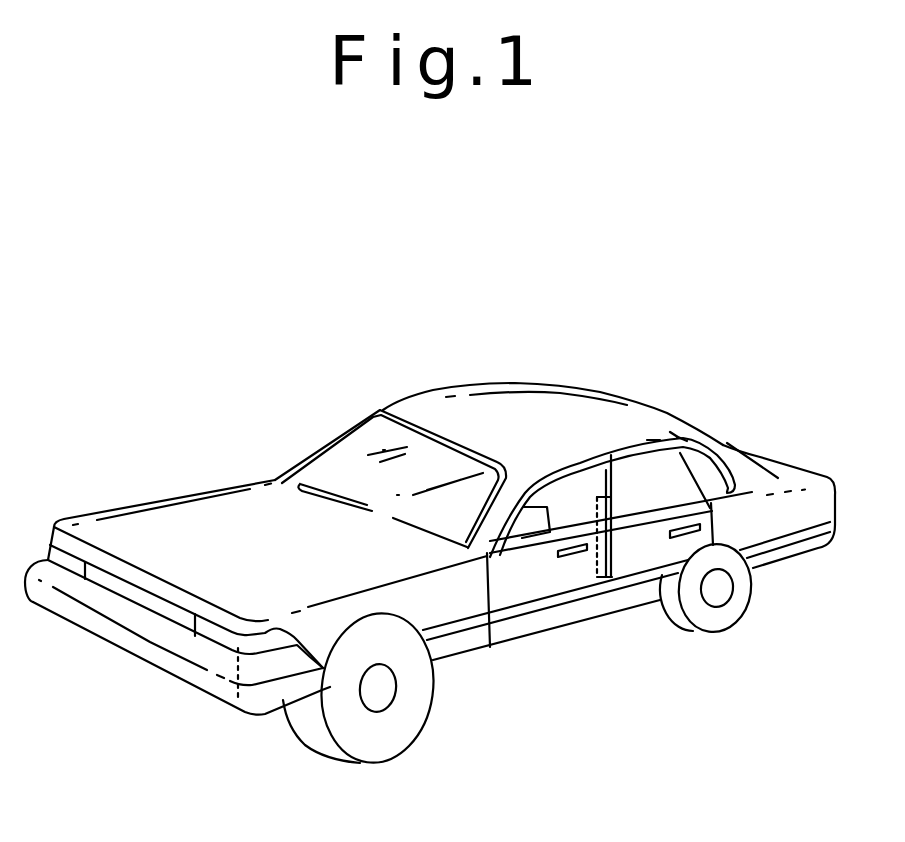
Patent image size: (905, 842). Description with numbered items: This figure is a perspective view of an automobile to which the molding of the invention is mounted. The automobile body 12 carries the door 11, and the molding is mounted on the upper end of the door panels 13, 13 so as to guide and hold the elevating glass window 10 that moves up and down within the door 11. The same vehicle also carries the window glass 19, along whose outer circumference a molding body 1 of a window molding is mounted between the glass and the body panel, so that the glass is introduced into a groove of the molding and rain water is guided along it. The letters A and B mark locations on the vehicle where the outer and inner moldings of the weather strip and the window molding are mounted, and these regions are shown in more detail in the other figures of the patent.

The vehicle body 1 is at (300, 463).
The front door 10 is at (565, 492).
The side sill 11 is at (543, 587).
The roof panel 12 is at (420, 412).
The door outer panel belt line 13 is at (550, 553).
The windshield 19 is at (422, 480).
The section A region A is at (614, 487).
The section B region B is at (325, 425).